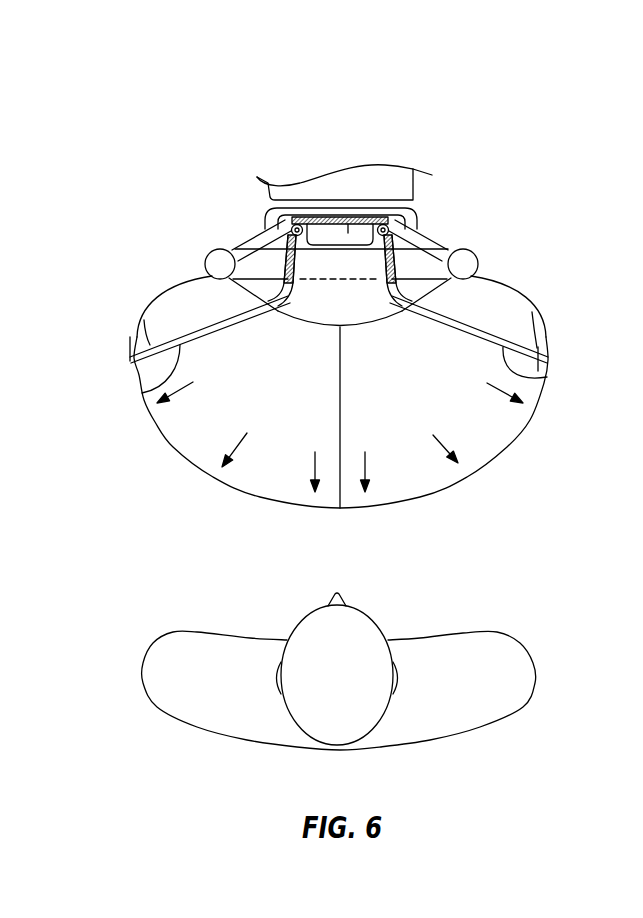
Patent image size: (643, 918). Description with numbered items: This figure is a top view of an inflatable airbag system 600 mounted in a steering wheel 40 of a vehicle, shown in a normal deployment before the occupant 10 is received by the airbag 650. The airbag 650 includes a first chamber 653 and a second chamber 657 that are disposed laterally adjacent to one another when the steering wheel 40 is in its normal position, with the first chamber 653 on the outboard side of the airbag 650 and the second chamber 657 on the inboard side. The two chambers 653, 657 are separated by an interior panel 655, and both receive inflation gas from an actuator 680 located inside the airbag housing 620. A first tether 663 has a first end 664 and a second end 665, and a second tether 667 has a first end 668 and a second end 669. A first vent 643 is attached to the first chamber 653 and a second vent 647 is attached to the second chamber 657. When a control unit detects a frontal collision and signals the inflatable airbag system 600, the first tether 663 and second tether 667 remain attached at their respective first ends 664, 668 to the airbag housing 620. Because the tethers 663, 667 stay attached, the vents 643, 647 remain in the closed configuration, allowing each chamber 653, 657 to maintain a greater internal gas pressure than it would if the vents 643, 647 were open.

The inflatable airbag system 600 is at (210, 104).
The actuator 680 is at (350, 204).
The first end of the first tether 664 is at (290, 228).
The first end of the second tether 668 is at (390, 230).
The airbag housing 620 is at (278, 243).
The steering wheel 40 is at (478, 267).
The airbag 650 is at (530, 423).
The second end of the first tether 665 is at (146, 322).
The second end of the second tether 669 is at (530, 312).
The first vent 643 is at (128, 347).
The second vent 647 is at (547, 343).
The first tether 663 is at (150, 398).
The second tether 667 is at (547, 377).
The first chamber 653 is at (197, 443).
The second chamber 657 is at (483, 440).
The interior panel 655 is at (338, 468).
The occupant 10 is at (464, 693).